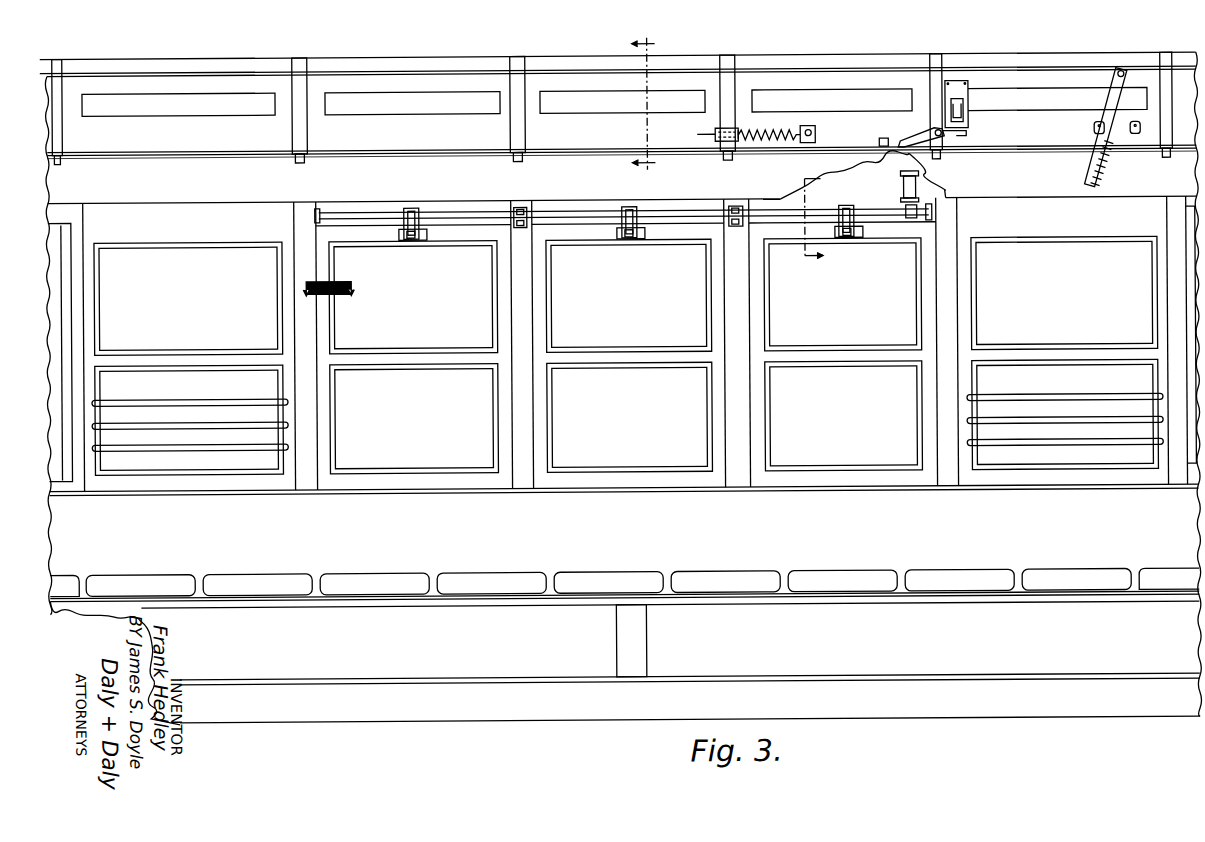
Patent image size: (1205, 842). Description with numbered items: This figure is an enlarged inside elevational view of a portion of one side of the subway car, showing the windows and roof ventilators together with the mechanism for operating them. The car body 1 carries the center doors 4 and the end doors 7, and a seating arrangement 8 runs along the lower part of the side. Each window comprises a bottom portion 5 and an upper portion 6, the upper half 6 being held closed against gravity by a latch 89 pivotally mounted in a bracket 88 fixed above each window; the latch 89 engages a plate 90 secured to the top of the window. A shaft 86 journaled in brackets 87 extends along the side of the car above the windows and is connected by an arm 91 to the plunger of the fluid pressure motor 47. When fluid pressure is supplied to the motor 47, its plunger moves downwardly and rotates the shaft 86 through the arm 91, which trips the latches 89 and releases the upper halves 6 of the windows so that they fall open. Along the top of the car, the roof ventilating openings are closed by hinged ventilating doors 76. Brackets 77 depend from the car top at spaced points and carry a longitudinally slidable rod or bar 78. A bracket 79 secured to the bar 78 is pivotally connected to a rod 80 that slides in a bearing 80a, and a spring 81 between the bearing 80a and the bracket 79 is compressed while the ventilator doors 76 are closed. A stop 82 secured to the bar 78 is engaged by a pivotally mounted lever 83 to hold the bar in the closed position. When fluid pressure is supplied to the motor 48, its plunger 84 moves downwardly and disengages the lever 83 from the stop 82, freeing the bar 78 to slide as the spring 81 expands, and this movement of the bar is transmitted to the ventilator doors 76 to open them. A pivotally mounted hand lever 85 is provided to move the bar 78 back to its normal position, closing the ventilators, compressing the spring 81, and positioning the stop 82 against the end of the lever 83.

The car body 1 is at (457, 715).
The center doors 4 is at (324, 302).
The bottom portion of window 5 is at (625, 317).
The upper portion of window 6 is at (625, 296).
The end doors 7 is at (651, 105).
The seating arrangement 8 is at (549, 571).
The fluid pressure motor 47 is at (902, 192).
The motor 48 is at (970, 118).
The ventilating doors 76 is at (614, 102).
The brackets 77 is at (309, 133).
The rod or bar 78 is at (452, 156).
The bracket 79 is at (817, 139).
The rod 80 is at (699, 135).
The bearing 80a is at (750, 126).
The spring 81 is at (775, 131).
The stop 82 is at (885, 140).
The lever 83 is at (918, 140).
The plunger 84 is at (966, 133).
The hand lever 85 is at (1097, 175).
The shaft 86 is at (467, 218).
The brackets 87 is at (523, 207).
The bracket 88 is at (415, 207).
The latch 89 is at (421, 239).
The plate 90 is at (408, 237).
The arm 91 is at (912, 220).